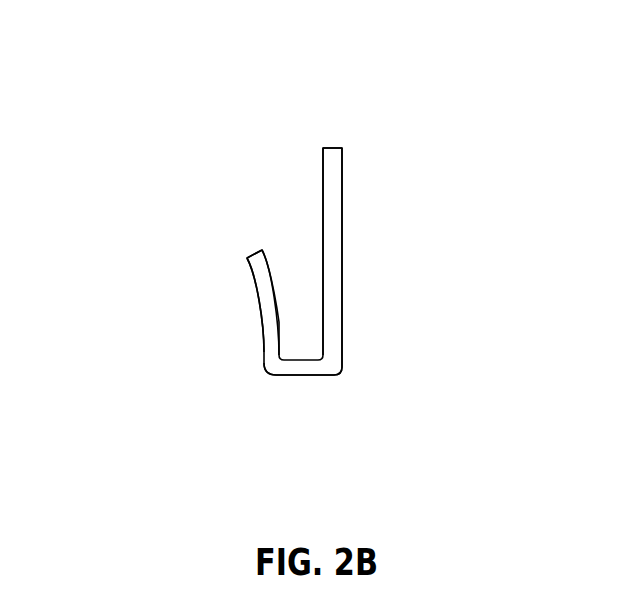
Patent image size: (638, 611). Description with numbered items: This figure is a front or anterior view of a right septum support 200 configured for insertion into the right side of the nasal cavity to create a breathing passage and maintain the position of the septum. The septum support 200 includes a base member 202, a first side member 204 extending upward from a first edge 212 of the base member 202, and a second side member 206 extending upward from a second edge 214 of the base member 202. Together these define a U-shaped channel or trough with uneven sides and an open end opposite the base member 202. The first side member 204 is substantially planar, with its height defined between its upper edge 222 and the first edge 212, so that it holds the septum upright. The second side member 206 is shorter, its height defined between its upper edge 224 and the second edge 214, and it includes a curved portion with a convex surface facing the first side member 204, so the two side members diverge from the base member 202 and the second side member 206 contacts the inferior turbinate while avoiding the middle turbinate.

The septum support 200 is at (138, 128).
The base member 202 is at (303, 375).
The first side member 204 is at (343, 261).
The second side member 206 is at (257, 295).
The first edge 212 is at (343, 372).
The second edge 214 is at (268, 368).
The upper edge 222 is at (335, 148).
The upper edge 224 is at (253, 252).